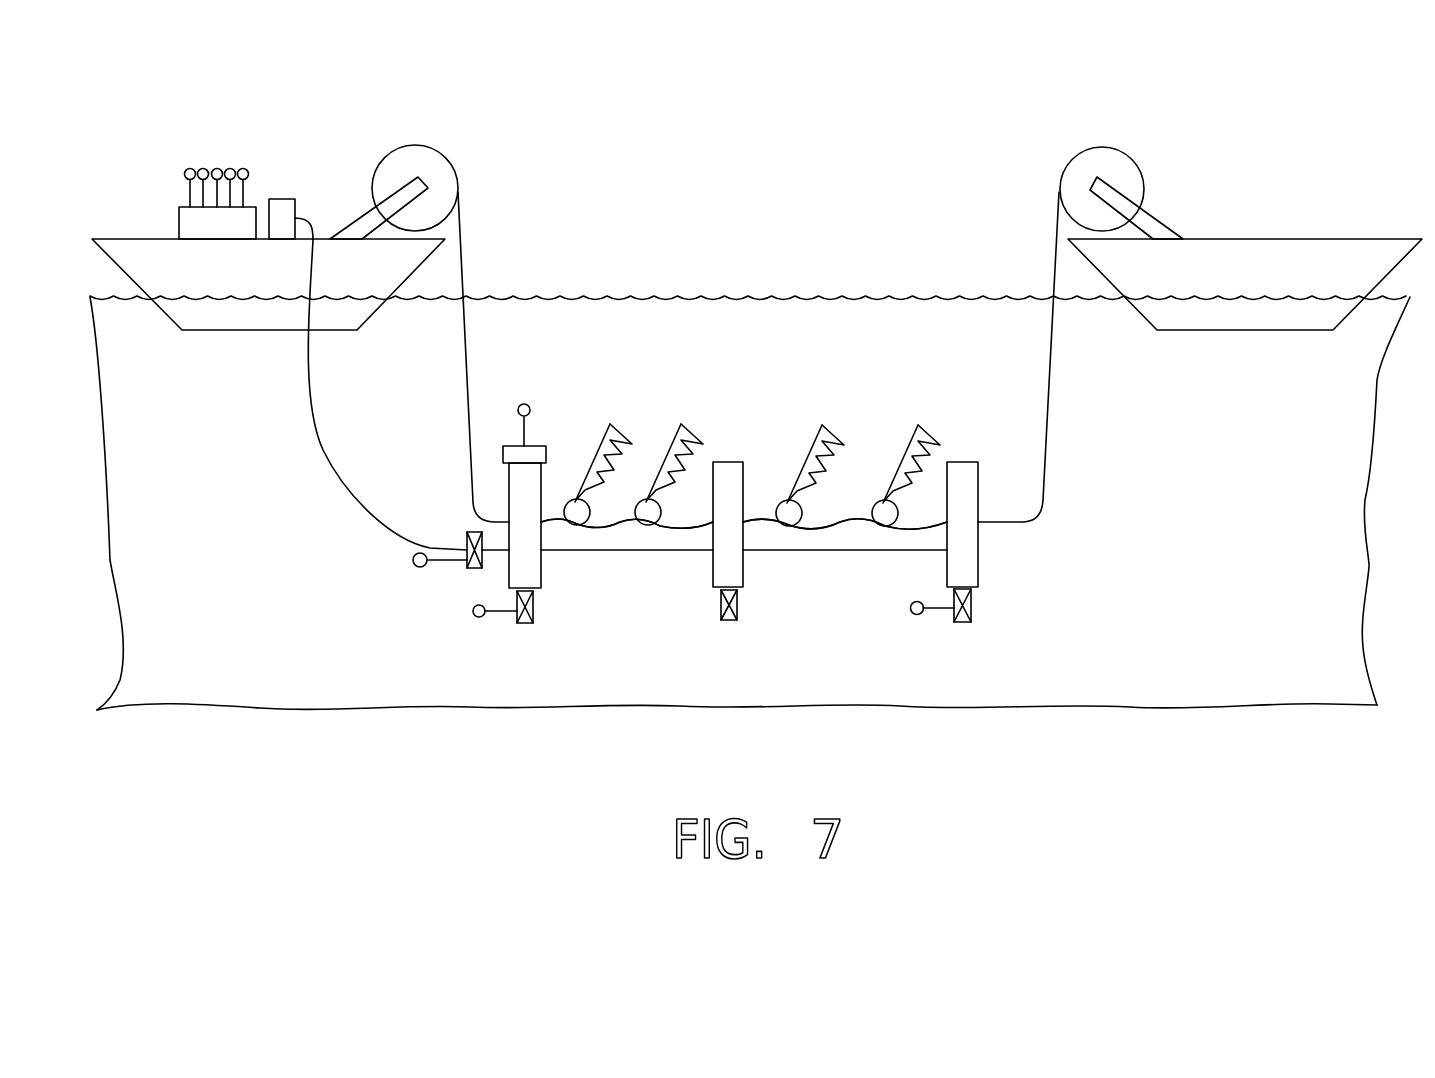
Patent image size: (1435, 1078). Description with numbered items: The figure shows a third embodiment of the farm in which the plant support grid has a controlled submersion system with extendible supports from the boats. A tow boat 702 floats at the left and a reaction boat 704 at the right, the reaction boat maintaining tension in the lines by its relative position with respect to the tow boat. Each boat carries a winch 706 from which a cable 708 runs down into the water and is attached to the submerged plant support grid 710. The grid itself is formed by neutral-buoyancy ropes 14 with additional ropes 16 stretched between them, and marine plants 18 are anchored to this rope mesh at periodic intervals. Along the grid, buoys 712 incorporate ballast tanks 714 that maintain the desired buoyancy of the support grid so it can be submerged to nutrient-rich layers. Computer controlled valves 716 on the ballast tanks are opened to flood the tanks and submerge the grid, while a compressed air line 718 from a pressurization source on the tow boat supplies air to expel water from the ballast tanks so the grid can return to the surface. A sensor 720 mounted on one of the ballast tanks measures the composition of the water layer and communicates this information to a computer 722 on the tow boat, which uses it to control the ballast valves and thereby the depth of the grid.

The tow boat 702 is at (259, 316).
The reaction boat 704 is at (1273, 255).
The winch 706 is at (420, 166).
The cable 708 is at (463, 278).
The plant support grid 710 is at (699, 389).
The buoy 712 is at (829, 456).
The ballast tank 714 is at (527, 568).
The computer controlled valve 716 is at (472, 568).
The compressed air line 718 is at (318, 447).
The sensor 720 is at (535, 445).
The computer 722 is at (187, 200).
The marine plant 18 is at (833, 440).
The rope 14 is at (848, 527).
The rope 16 is at (848, 527).